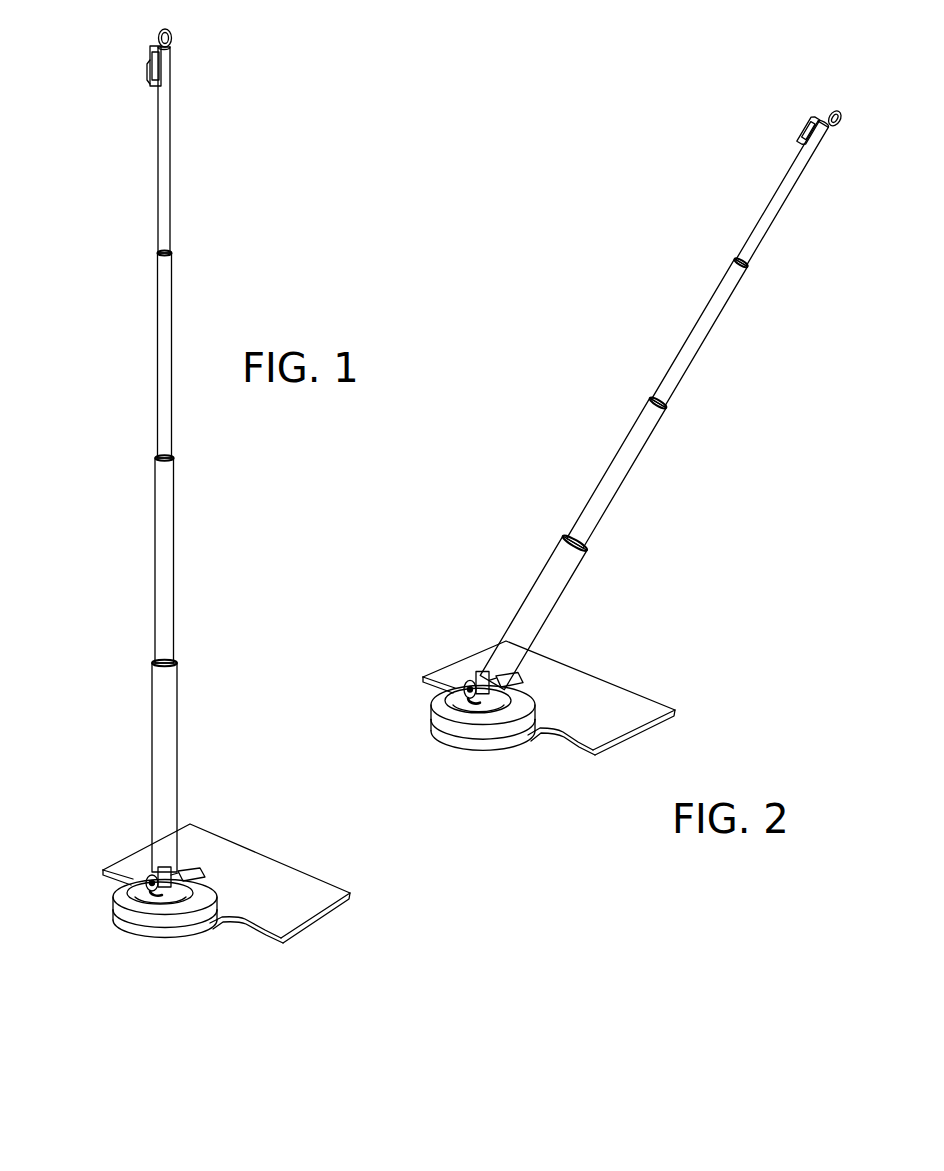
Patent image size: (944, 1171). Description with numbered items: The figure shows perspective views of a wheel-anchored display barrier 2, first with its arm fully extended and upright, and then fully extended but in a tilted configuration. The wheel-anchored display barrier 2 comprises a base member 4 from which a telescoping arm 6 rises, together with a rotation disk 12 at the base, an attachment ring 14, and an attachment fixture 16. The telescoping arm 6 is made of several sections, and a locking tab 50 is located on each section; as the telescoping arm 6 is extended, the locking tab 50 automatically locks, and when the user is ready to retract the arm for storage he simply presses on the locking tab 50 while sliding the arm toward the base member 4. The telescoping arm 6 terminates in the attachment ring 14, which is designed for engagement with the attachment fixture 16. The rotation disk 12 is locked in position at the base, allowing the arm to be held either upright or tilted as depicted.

In FIG. 1, the wheel-anchored display barrier 2 is at (98, 752).
In FIG. 2, the wheel-anchored display barrier 2 is at (688, 602).
In FIG. 1, the base member 4 is at (265, 853).
In FIG. 2, the base member 4 is at (585, 668).
In FIG. 1, the telescoping arm 6 is at (158, 358).
In FIG. 2, the telescoping arm 6 is at (708, 338).
In FIG. 1, the rotation disk 12 is at (197, 888).
In FIG. 2, the rotation disk 12 is at (522, 693).
In FIG. 1, the attachment ring 14 is at (170, 33).
In FIG. 2, the attachment ring 14 is at (837, 112).
In FIG. 1, the attachment fixture 16 is at (150, 82).
In FIG. 2, the attachment fixture 16 is at (808, 133).
In FIG. 2, the locking tab 50 is at (738, 263).